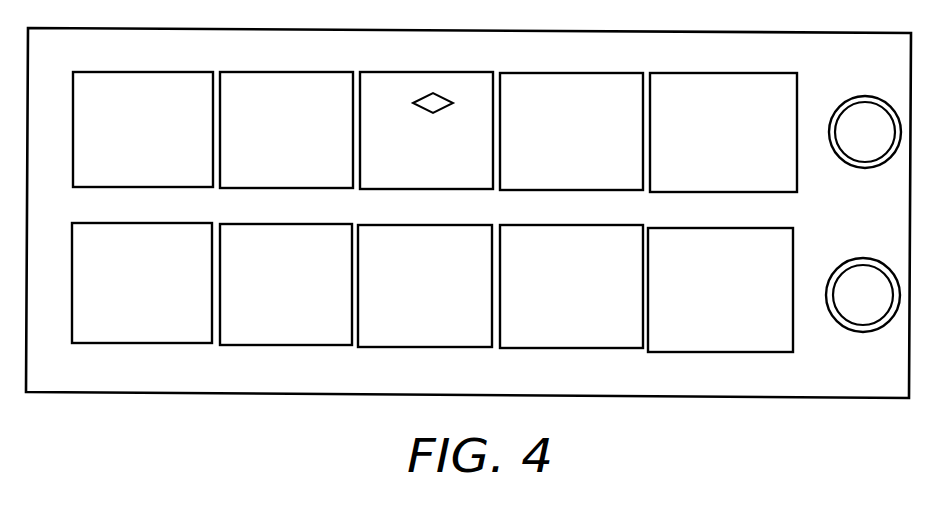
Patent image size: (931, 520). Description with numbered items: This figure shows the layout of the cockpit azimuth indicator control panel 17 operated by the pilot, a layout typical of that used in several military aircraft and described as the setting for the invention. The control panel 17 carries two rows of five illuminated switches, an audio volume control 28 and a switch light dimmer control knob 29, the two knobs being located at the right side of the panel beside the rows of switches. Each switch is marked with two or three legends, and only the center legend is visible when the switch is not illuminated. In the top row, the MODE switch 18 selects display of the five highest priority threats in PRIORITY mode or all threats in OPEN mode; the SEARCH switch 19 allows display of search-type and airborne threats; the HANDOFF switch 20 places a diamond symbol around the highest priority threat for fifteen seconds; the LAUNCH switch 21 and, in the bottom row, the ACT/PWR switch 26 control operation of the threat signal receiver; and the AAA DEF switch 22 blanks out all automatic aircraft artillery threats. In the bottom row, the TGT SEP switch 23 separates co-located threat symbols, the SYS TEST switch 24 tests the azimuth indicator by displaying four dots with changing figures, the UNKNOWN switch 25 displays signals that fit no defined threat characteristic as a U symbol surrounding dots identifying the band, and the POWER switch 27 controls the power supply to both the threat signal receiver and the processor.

The azimuth indicator control panel 17 is at (786, 32).
The MODE switch 18 is at (132, 70).
The SEARCH switch 19 is at (268, 70).
The HANDOFF switch 20 is at (408, 72).
The LAUNCH switch 21 is at (543, 72).
The AAA DEF switch 22 is at (700, 73).
The TGT SEP switch 23 is at (123, 345).
The SYS TEST switch 24 is at (265, 345).
The UNKNOWN switch 25 is at (402, 348).
The ACT/PWR switch 26 is at (553, 348).
The POWER switch 27 is at (698, 352).
The audio volume control 28 is at (863, 98).
The switch light dimmer control knob 29 is at (857, 262).